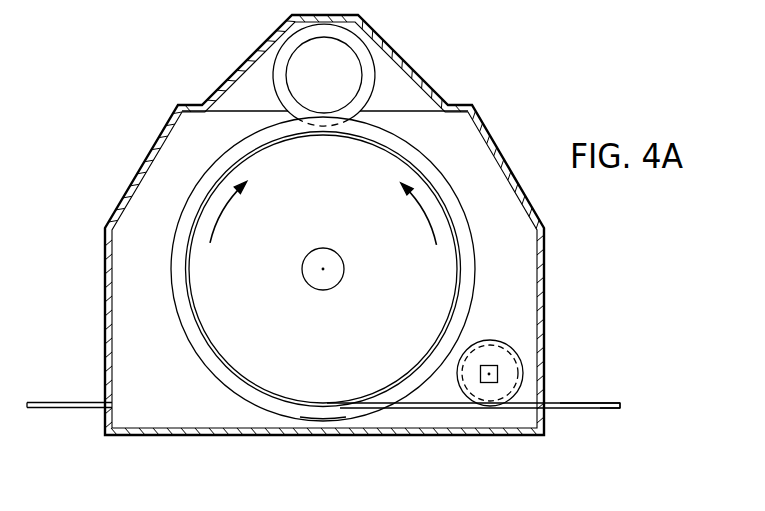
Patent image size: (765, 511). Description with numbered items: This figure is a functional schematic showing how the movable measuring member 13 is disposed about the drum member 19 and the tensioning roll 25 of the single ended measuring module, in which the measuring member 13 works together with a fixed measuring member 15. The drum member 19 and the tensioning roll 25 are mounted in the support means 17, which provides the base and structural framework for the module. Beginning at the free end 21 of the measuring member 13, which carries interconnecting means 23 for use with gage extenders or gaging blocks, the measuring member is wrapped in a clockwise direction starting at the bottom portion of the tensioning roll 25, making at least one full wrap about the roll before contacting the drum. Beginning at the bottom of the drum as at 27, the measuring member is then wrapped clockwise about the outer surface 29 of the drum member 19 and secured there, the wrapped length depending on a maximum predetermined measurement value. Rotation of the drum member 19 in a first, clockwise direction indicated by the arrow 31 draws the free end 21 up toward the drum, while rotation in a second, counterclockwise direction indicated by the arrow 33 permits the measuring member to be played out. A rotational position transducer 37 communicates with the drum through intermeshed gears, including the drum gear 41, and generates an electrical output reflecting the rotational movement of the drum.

The measuring member 13 is at (564, 408).
The fixed measuring member 15 is at (79, 402).
The support means 17 is at (135, 177).
The drum member 19 is at (375, 345).
The free end of the measuring member 21 is at (565, 402).
The interconnecting means 23 is at (606, 402).
The tensioning roll 25 is at (487, 347).
The bottom of the drum member 27 is at (304, 410).
The outer surface of the drum member 29 is at (178, 288).
The arrow 31 is at (215, 228).
The arrow 33 is at (427, 212).
The rotational position transducer 37 is at (353, 88).
The gear of the drum member 41 is at (254, 130).